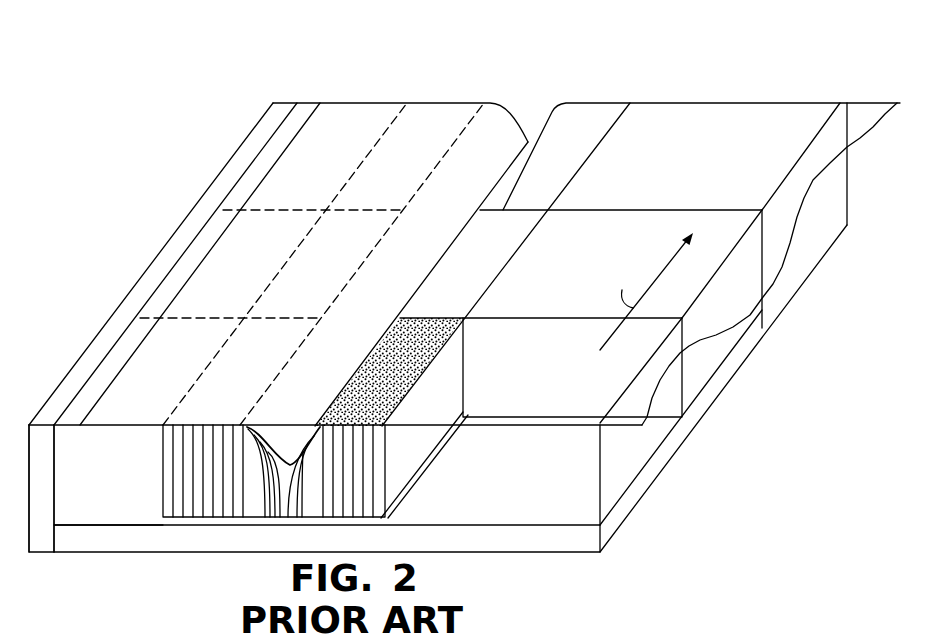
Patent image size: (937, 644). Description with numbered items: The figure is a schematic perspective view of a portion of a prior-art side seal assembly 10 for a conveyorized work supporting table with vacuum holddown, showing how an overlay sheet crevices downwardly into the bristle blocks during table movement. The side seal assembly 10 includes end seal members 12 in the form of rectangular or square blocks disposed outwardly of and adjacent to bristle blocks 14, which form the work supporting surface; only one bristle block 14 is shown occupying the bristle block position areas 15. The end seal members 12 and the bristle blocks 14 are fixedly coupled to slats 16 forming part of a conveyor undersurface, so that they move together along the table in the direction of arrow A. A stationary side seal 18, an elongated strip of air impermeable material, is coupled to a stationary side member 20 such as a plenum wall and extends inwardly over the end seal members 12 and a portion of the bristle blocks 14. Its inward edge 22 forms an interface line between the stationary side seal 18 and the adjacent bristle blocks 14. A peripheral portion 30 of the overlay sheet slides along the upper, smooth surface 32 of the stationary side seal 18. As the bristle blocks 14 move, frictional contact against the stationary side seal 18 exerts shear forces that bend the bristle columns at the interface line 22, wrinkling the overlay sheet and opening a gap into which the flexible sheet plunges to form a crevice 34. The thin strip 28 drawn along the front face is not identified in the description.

The side seal assembly 10 is at (488, 60).
The end seal members 12 is at (283, 165).
The bristle blocks 14 is at (415, 318).
The bristle block position areas 15 is at (567, 117).
The slats 16 is at (787, 289).
The stationary side seal 18 is at (307, 76).
The stationary side member 20 is at (76, 380).
The inward edge 22 is at (436, 170).
The gap 28 is at (418, 483).
The peripheral portion 30 is at (363, 113).
The upper smooth surface 32 is at (257, 190).
The crevice 34 is at (291, 436).